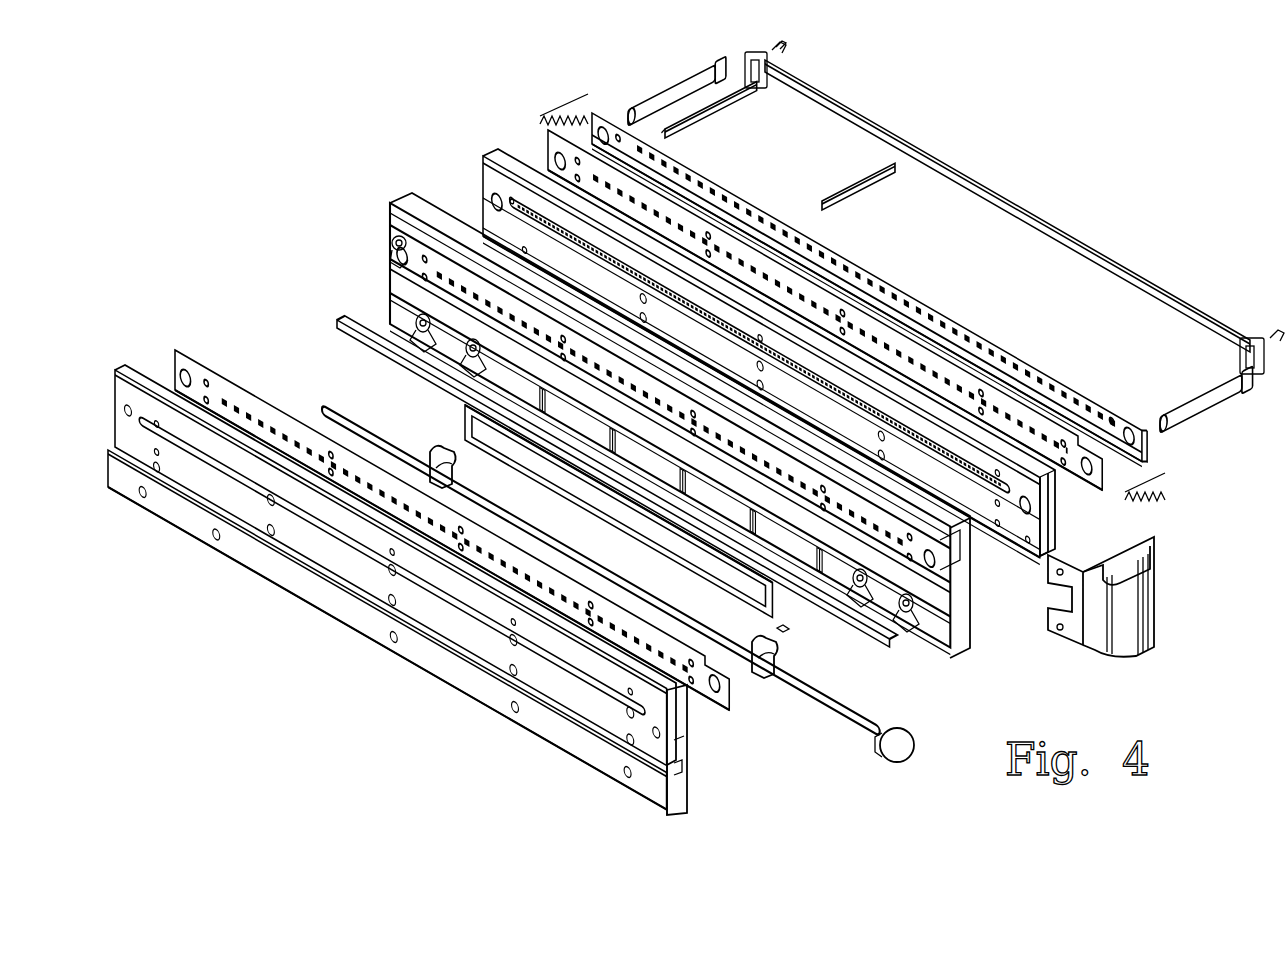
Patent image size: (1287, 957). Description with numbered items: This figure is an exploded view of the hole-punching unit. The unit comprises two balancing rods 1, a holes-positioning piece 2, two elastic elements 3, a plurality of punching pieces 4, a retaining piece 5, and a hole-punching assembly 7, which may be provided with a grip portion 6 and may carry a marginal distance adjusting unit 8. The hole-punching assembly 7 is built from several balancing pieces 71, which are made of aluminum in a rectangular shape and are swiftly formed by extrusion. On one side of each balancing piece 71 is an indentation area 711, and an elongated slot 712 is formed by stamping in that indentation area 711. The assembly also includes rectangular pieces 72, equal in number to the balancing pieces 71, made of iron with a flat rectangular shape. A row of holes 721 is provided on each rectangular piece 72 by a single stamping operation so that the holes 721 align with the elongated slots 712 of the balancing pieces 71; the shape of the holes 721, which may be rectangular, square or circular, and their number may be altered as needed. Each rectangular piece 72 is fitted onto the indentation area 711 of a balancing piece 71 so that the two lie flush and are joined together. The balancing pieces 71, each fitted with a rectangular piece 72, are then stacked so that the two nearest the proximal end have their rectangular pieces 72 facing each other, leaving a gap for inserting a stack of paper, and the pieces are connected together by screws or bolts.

The balancing rod 1 is at (685, 90).
The holes-positioning piece 2 is at (610, 115).
The elastic element 3 is at (538, 118).
The punching piece 4 is at (728, 105).
The retaining piece 5 is at (962, 175).
The grip portion 6 is at (1107, 635).
The hole-punching assembly 7 is at (433, 85).
The marginal distance adjusting unit 8 is at (792, 634).
The balancing piece 71 is at (485, 176).
The rectangular piece 72 is at (1108, 482).
The indentation area 711 is at (955, 615).
The elongated slot 712 is at (565, 240).
The holes 721 is at (395, 240).